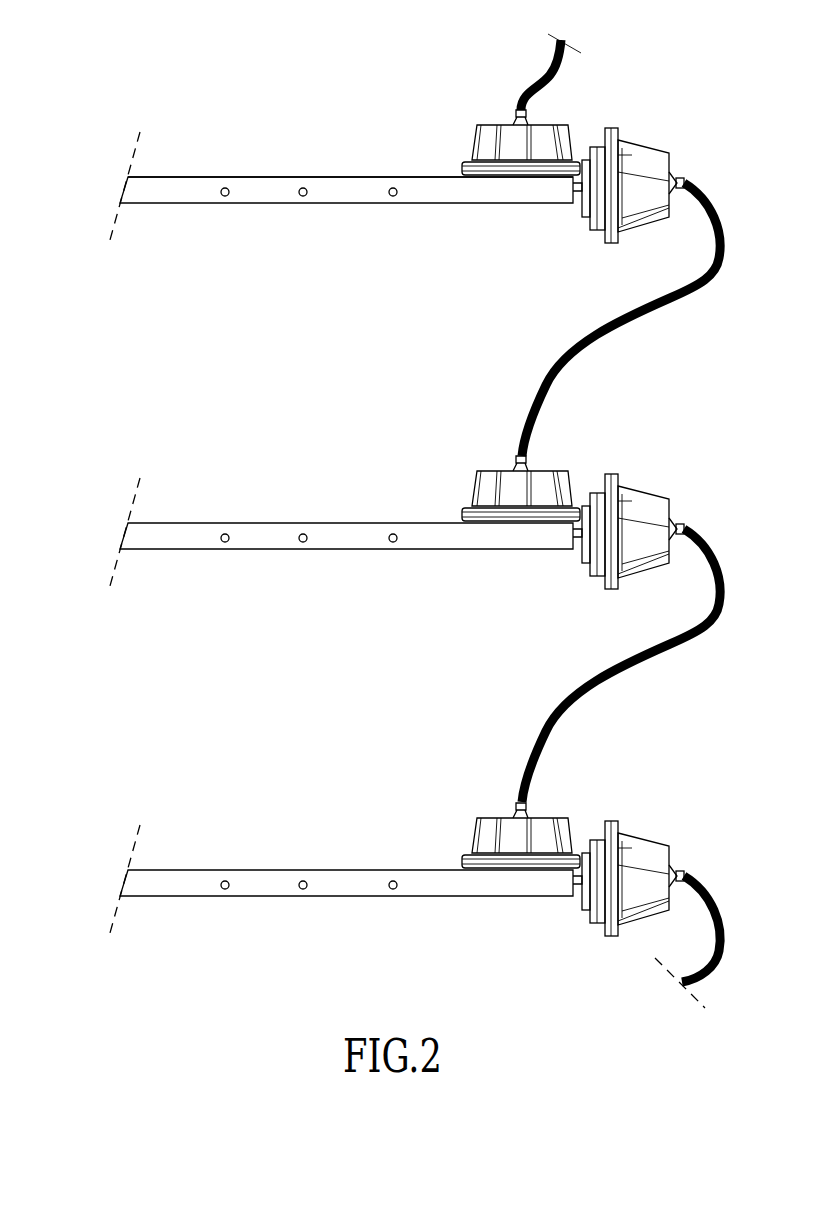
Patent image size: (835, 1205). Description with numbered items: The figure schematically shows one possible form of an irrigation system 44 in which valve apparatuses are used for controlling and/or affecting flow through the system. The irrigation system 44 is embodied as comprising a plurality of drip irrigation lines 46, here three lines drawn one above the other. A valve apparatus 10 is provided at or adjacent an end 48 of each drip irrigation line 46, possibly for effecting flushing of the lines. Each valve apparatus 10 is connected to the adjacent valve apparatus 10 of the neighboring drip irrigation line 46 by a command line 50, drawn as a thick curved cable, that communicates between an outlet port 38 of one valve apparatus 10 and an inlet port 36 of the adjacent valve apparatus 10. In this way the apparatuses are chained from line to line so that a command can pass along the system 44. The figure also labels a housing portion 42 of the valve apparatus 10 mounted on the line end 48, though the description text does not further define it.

The valve apparatus 10 is at (619, 103).
The inlet port 36 is at (514, 112).
The outlet port 38 is at (677, 178).
The housing 42 is at (480, 177).
The irrigation system 44 is at (188, 98).
The drip irrigation line 46 is at (275, 178).
The end of line 48 is at (432, 190).
The command line 50 is at (686, 294).